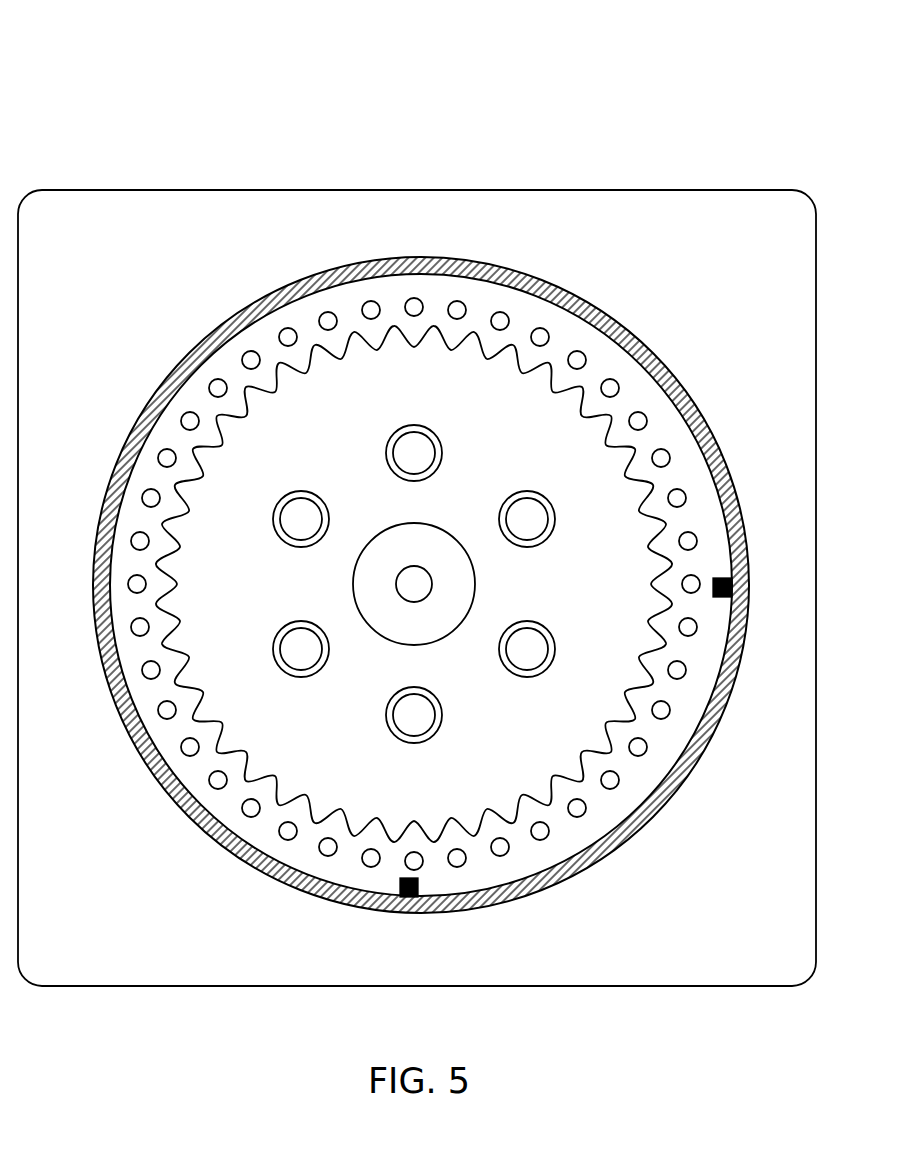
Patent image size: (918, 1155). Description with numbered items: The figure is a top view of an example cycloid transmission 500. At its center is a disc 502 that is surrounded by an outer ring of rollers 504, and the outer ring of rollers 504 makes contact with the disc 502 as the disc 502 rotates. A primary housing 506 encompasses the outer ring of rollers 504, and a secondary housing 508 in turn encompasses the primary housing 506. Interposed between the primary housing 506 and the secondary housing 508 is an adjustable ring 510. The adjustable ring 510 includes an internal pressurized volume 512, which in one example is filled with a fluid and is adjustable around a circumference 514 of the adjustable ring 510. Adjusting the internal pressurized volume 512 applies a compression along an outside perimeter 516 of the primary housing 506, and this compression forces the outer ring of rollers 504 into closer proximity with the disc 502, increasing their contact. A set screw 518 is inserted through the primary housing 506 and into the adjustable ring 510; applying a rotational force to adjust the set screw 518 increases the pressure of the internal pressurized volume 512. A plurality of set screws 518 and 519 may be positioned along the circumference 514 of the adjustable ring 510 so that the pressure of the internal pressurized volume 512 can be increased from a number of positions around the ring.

The cycloid transmission 500 is at (153, 97).
The disc 502 is at (508, 784).
The outer ring of rollers 504 is at (415, 300).
The primary housing 506 is at (643, 391).
The secondary housing 508 is at (612, 262).
The adjustable ring 510 is at (98, 522).
The internal pressurized volume 512 is at (95, 603).
The circumference 514 is at (118, 523).
The outside perimeter 516 is at (153, 437).
The set screw 518 is at (728, 579).
The set screw 519 is at (398, 884).